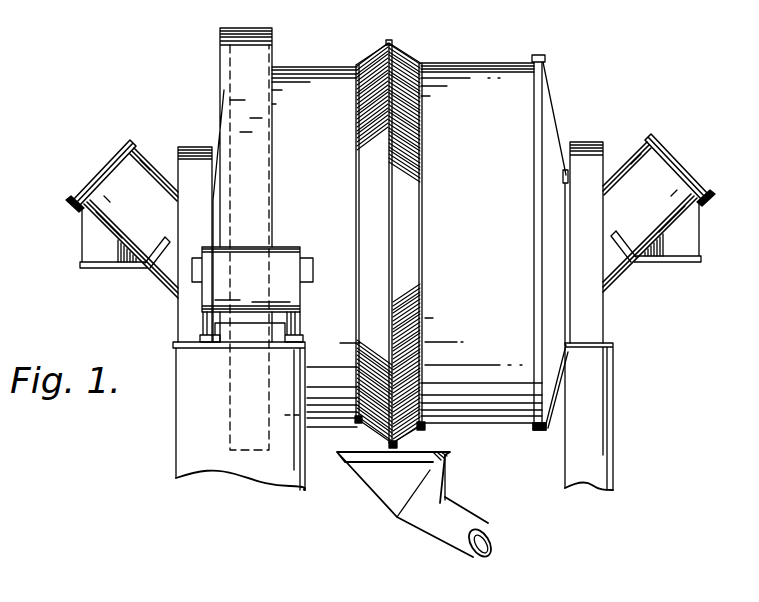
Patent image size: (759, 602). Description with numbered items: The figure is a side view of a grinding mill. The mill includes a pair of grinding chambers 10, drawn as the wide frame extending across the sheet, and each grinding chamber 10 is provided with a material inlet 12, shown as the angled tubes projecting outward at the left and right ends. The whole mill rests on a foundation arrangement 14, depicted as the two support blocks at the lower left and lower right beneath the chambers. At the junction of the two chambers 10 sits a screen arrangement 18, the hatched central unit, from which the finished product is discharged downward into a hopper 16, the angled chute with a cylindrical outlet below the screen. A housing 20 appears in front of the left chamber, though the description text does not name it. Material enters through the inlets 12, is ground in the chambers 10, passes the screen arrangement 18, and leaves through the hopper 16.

The grinding chamber 10 is at (305, 66).
The material inlet 12 is at (92, 190).
The foundation arrangement 14 is at (180, 423).
The hopper 16 is at (366, 482).
The screen arrangement 18 is at (402, 53).
The drive housing 20 is at (240, 290).